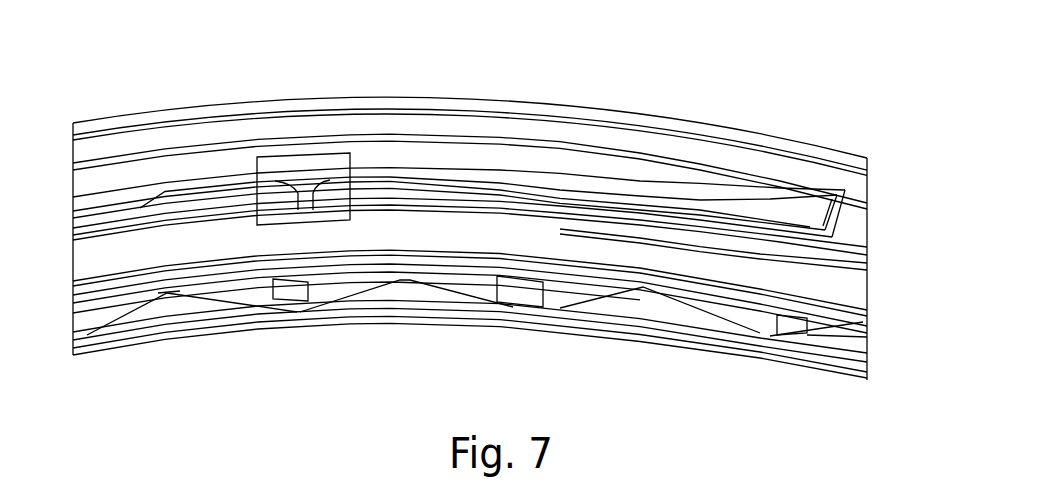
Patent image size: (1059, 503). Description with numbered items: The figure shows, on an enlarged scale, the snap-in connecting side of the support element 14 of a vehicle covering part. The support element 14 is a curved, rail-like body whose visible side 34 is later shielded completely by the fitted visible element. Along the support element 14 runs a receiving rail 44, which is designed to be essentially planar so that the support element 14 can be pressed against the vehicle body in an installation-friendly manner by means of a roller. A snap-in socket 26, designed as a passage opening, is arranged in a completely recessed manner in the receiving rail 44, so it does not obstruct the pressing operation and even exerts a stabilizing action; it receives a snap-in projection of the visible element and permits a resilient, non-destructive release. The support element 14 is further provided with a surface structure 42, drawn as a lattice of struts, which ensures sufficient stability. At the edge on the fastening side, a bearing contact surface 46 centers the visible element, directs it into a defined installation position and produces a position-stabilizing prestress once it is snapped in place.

The support element 14 is at (683, 121).
The snap-in socket 26 is at (310, 192).
The visible side 34 is at (406, 224).
The surface structure 42 is at (442, 174).
The receiving rail 44 is at (373, 187).
The bearing contact surface 46 is at (583, 104).